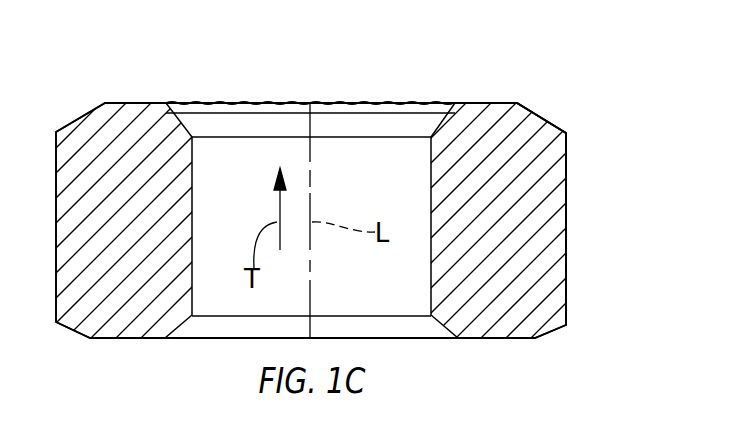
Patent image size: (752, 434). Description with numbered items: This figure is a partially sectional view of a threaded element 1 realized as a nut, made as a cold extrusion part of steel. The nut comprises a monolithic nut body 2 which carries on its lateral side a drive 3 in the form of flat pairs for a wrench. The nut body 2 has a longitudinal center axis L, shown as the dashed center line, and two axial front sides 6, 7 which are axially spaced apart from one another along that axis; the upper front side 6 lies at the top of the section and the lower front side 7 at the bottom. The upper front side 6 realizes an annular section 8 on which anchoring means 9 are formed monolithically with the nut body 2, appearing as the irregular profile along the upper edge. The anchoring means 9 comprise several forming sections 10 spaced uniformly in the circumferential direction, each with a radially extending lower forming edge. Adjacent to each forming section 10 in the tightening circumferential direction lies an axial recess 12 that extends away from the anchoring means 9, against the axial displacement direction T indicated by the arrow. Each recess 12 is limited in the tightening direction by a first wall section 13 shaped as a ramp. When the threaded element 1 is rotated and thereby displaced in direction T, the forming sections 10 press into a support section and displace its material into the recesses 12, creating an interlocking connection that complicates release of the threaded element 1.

The threaded element 1 is at (590, 188).
The nut body 2 is at (432, 257).
The drive 3 is at (566, 253).
The upper front side 6 is at (492, 103).
The lower front side 7 is at (494, 338).
The annular section 8 is at (141, 103).
The anchoring means 9 is at (214, 74).
The forming section 10 is at (382, 103).
The axial recess 12 is at (357, 103).
The first wall section 13 is at (325, 103).